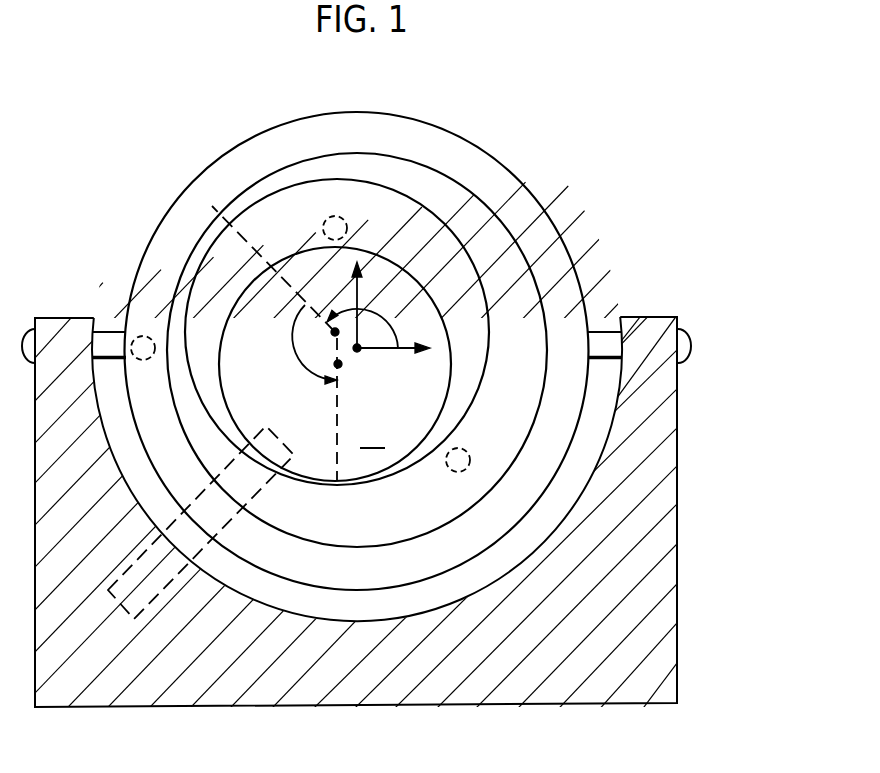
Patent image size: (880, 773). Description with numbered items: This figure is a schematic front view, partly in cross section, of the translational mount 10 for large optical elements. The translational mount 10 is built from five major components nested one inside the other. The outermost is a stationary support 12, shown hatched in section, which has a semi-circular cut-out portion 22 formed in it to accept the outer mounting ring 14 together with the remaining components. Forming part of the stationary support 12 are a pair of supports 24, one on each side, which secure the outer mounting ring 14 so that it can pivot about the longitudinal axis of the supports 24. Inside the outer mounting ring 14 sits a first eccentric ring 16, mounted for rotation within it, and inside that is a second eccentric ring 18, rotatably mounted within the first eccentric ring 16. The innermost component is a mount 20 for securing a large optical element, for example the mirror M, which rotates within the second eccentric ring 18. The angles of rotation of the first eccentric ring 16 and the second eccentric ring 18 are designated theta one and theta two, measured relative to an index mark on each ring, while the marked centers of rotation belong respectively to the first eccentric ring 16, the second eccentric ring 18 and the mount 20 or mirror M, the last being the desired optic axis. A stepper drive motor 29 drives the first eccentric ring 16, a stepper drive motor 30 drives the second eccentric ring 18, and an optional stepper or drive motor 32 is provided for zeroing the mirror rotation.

The translational mount 10 is at (700, 668).
The stationary support 12 is at (652, 583).
The outer mounting ring 14 is at (320, 571).
The first eccentric ring 16 is at (533, 339).
The second eccentric ring 18 is at (437, 262).
The mount 20 is at (283, 320).
The semi-circular cut-out portion 22 is at (365, 620).
The supports 24 is at (112, 330).
The stepper drive motor 29 is at (145, 334).
The stepper drive motor 30 is at (459, 447).
The stepper or drive motor 32 is at (330, 214).